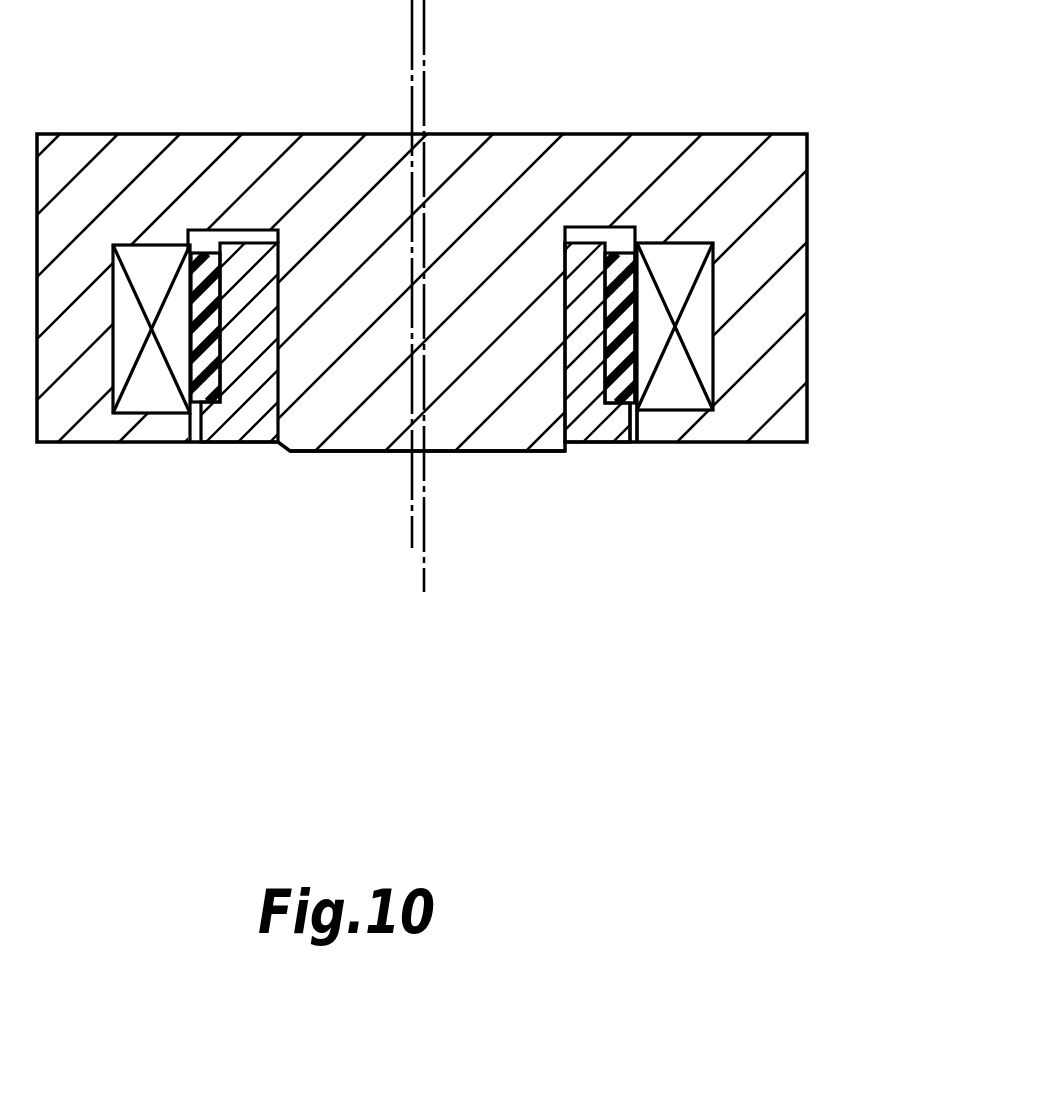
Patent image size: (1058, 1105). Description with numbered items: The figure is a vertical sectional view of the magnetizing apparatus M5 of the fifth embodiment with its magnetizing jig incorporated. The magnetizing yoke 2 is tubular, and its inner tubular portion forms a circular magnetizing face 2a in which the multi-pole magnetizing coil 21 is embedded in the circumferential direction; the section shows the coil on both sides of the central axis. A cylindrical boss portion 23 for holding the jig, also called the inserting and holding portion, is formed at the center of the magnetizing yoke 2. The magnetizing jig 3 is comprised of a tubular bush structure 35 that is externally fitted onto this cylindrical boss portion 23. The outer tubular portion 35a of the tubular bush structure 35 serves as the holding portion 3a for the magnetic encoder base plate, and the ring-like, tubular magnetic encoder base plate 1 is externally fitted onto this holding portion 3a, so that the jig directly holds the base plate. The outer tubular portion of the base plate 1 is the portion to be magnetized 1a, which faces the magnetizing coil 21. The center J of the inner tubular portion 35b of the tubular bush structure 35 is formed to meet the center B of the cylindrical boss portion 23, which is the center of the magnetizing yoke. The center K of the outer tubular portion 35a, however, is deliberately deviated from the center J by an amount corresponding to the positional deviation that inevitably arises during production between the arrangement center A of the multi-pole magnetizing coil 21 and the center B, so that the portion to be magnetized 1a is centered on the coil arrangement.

The magnetizing yoke 2 is at (793, 225).
The magnetizing face 2a is at (630, 442).
The multi-pole magnetizing coil 21 is at (705, 335).
The cylindrical boss portion for holding jig 23 is at (327, 447).
The magnetic encoder base plate 1 is at (620, 250).
The portion to be magnetized 1a is at (640, 300).
The magnetizing jig 3 is at (228, 430).
The tubular bush structure 35 is at (429, 389).
The outer tubular portion of the tubular bush structure 35a is at (396, 138).
The holding portion of the magnetic encoder base plate 3a is at (210, 232).
The inner tubular portion of the tubular bush structure 35b is at (567, 367).
The magnetizing apparatus M5 is at (793, 112).
The arrangement center of the multi-pole magnetizing coil A is at (412, 512).
The center of the outer tubular portion K is at (356, 328).
The center of the cylindrical boss portion for holding jig B is at (425, 483).
The center of the inner tubular portion J is at (507, 296).